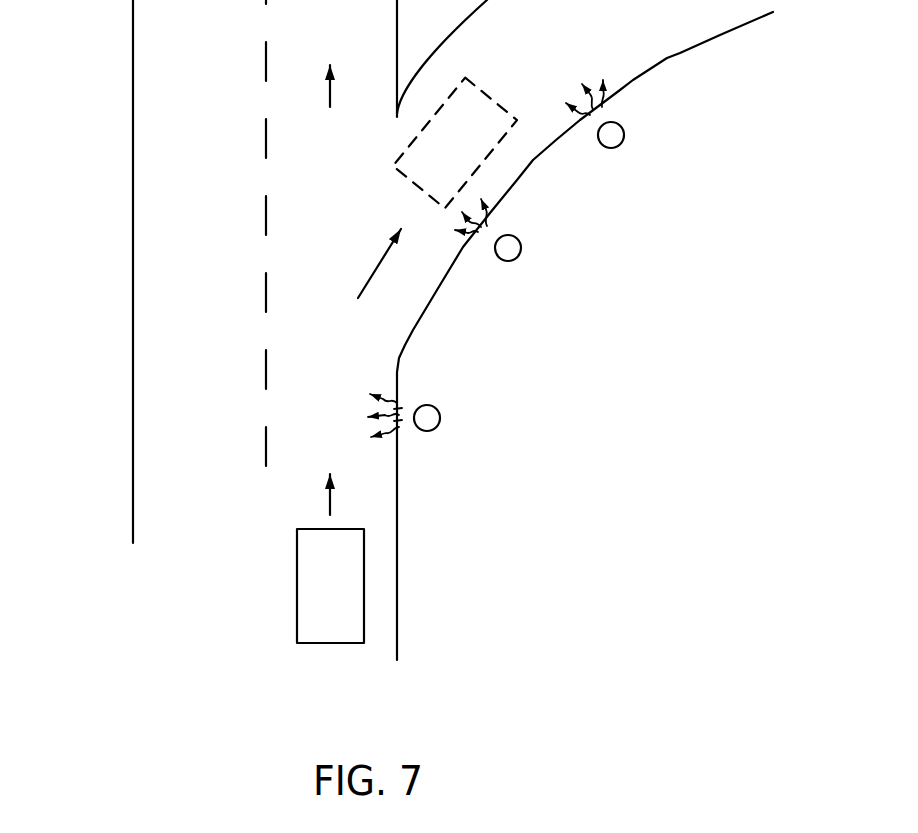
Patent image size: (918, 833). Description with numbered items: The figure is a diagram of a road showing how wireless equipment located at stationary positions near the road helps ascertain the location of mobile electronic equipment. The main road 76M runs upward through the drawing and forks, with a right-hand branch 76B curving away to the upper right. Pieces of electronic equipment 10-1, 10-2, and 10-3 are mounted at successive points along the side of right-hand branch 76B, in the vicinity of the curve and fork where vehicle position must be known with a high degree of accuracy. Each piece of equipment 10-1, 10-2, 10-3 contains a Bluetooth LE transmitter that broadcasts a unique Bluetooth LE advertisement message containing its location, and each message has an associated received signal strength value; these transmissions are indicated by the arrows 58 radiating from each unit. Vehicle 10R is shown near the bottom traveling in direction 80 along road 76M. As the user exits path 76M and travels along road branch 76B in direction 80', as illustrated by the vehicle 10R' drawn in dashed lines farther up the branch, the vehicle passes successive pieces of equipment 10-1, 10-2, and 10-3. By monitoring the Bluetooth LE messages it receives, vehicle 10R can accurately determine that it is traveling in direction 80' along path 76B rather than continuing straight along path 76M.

The vehicle 10R is at (380, 586).
The vehicle 10R' is at (478, 129).
The electronic equipment 10-1 is at (427, 431).
The electronic equipment 10-2 is at (508, 261).
The electronic equipment 10-3 is at (611, 148).
The emitted signals 58 is at (397, 403).
The right-hand branch 76B is at (665, 46).
The road 76M is at (138, 382).
The direction 80 is at (350, 483).
The direction 80' is at (369, 254).